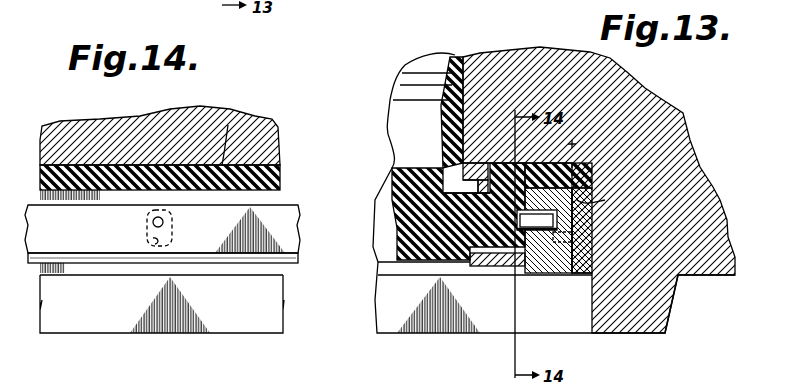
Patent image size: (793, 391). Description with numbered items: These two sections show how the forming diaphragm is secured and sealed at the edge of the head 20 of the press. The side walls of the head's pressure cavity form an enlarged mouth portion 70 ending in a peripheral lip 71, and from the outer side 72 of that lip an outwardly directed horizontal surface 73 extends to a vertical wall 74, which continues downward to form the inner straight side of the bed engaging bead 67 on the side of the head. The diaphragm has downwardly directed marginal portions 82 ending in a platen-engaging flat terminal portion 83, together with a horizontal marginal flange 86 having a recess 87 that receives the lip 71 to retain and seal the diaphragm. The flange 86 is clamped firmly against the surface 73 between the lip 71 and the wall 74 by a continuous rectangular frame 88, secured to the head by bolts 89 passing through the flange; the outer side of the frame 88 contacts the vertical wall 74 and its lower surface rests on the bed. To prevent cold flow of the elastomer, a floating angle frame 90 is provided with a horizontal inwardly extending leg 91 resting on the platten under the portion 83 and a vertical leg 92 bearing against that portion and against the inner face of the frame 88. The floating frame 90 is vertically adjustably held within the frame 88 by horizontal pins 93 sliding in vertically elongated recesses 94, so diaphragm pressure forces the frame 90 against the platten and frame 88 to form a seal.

In FIG. 14, the head 20 is at (70, 118).
In FIG. 13, the head 20 is at (662, 90).
In FIG. 13, the bed engaging bead 67 is at (662, 312).
In FIG. 13, the enlarged mouth portion 70 is at (460, 85).
In FIG. 13, the peripheral lip 71 is at (462, 177).
In FIG. 13, the outer side of the lip 72 is at (492, 168).
In FIG. 13, the horizontal surface 73 is at (592, 155).
In FIG. 13, the vertical wall 74 is at (592, 185).
In FIG. 13, the marginal portions 82 is at (395, 228).
In FIG. 13, the peripheral flat terminal portion 83 is at (440, 281).
In FIG. 14, the marginal flange 86 is at (228, 125).
In FIG. 13, the marginal flange 86 is at (592, 175).
In FIG. 13, the recess 87 is at (448, 196).
In FIG. 14, the continuous rectangular frame 88 is at (268, 268).
In FIG. 13, the continuous rectangular frame 88 is at (605, 200).
In FIG. 13, the bolts 89 is at (572, 144).
In FIG. 14, the floating angle frame 90 is at (281, 222).
In FIG. 13, the floating angle frame 90 is at (500, 255).
In FIG. 14, the horizontal inwardly extending leg 91 is at (100, 262).
In FIG. 13, the horizontal inwardly extending leg 91 is at (481, 268).
In FIG. 14, the vertical leg 92 is at (162, 229).
In FIG. 13, the vertical leg 92 is at (517, 240).
In FIG. 14, the horizontal pins 93 is at (152, 222).
In FIG. 13, the horizontal pins 93 is at (600, 222).
In FIG. 14, the vertically elongated recesses 94 is at (153, 241).
In FIG. 13, the vertically elongated recesses 94 is at (575, 238).